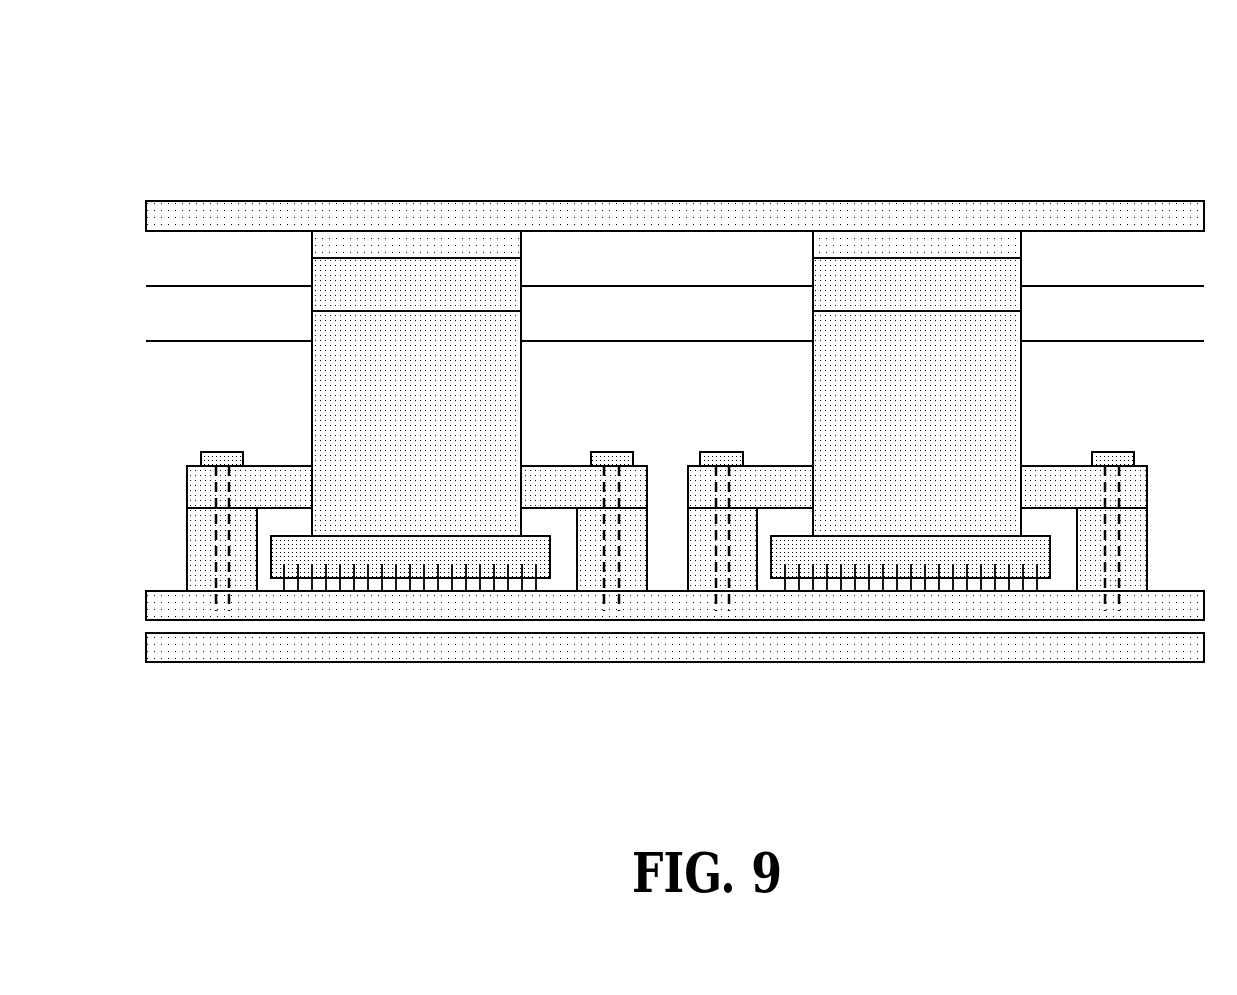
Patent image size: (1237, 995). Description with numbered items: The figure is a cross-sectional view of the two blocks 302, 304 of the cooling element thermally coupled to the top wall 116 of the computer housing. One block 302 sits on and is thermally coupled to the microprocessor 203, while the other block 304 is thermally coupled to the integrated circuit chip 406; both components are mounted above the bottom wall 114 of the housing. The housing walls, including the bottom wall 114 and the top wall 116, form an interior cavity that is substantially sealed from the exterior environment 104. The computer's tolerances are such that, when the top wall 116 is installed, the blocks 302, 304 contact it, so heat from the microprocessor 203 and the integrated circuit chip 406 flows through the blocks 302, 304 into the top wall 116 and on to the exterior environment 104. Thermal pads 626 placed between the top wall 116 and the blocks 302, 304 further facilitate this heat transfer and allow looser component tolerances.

The exterior environment 104 is at (737, 33).
The bottom wall 114 is at (647, 645).
The top wall 116 is at (688, 217).
The microprocessor 203 is at (368, 548).
The block 302 is at (521, 270).
The block 304 is at (1021, 270).
The integrated circuit chip 406 is at (840, 550).
The thermal pads 626 is at (409, 243).